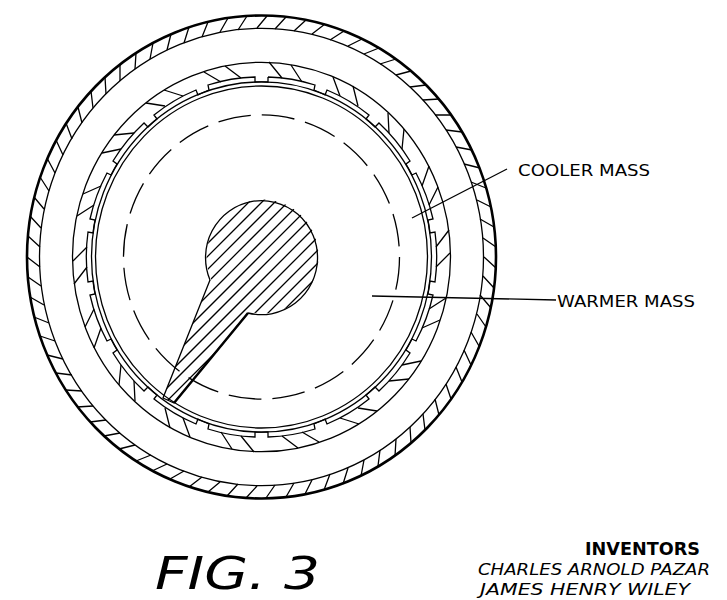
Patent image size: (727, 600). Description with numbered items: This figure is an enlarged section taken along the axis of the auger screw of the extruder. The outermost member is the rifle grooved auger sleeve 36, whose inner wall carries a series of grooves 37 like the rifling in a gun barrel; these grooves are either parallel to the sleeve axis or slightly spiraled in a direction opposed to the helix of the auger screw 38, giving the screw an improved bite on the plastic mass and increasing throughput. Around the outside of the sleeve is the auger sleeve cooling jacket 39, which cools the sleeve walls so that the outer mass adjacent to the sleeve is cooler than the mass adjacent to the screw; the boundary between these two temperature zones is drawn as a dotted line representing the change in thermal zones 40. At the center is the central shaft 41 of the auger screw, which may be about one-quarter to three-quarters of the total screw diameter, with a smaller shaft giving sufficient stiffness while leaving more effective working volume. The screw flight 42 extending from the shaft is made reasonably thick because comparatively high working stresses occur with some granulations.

The rifle grooved auger sleeve 36 is at (450, 257).
The grooves 37 is at (418, 165).
The auger screw 38 is at (402, 328).
The auger sleeve cooling jacket 39 is at (445, 417).
The change in thermal zones 40 is at (362, 358).
The central shaft 41 is at (215, 228).
The screw flight 42 is at (222, 352).